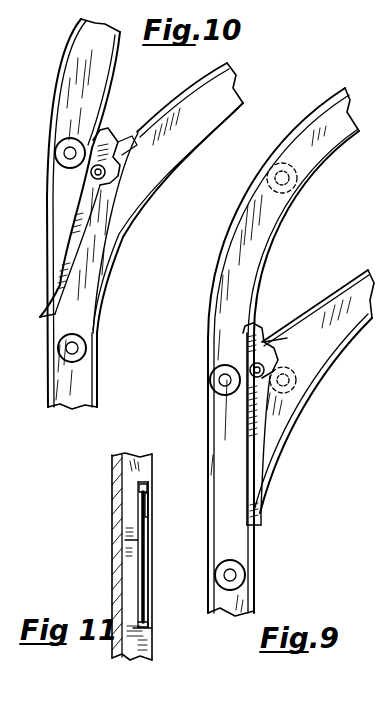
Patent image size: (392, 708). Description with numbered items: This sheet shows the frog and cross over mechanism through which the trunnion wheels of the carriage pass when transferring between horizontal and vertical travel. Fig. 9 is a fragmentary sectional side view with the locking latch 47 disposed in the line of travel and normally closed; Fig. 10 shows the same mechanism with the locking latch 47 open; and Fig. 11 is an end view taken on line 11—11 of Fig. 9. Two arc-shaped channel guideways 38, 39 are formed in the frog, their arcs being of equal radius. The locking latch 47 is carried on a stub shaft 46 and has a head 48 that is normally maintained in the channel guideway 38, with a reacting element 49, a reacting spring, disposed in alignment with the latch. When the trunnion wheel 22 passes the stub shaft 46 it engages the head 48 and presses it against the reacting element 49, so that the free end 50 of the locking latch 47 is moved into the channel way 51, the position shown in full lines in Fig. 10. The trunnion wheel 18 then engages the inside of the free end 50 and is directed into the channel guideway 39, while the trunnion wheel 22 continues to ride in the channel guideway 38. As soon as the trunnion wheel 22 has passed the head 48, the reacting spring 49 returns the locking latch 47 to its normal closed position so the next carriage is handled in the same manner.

In FIG. 9, the section line 11 is at (266, 300).
In FIG. 10, the trunnion wheel 18 is at (86, 350).
In FIG. 9, the trunnion wheel 18 is at (244, 575).
In FIG. 10, the trunnion wheel 22 is at (85, 147).
In FIG. 9, the trunnion wheel 22 is at (213, 381).
In FIG. 10, the channel guideway 38 is at (93, 74).
In FIG. 9, the channel guideway 38 is at (275, 226).
In FIG. 11, the channel guideway 38 is at (155, 463).
In FIG. 10, the channel guideway 39 is at (187, 134).
In FIG. 9, the channel guideway 39 is at (350, 327).
In FIG. 11, the channel guideway 39 is at (130, 568).
In FIG. 10, the stub shaft 46 is at (107, 173).
In FIG. 9, the stub shaft 46 is at (270, 373).
In FIG. 11, the stub shaft 46 is at (152, 516).
In FIG. 10, the locking latch 47 is at (70, 242).
In FIG. 9, the locking latch 47 is at (253, 435).
In FIG. 11, the locking latch 47 is at (146, 563).
In FIG. 10, the head 48 is at (110, 134).
In FIG. 9, the head 48 is at (262, 335).
In FIG. 11, the head 48 is at (150, 488).
In FIG. 10, the reacting element 49 is at (128, 148).
In FIG. 9, the reacting element 49 is at (287, 339).
In FIG. 10, the free end 50 is at (53, 315).
In FIG. 9, the free end 50 is at (267, 508).
In FIG. 9, the channel way 51 is at (251, 546).
In FIG. 11, the channel way 51 is at (153, 624).